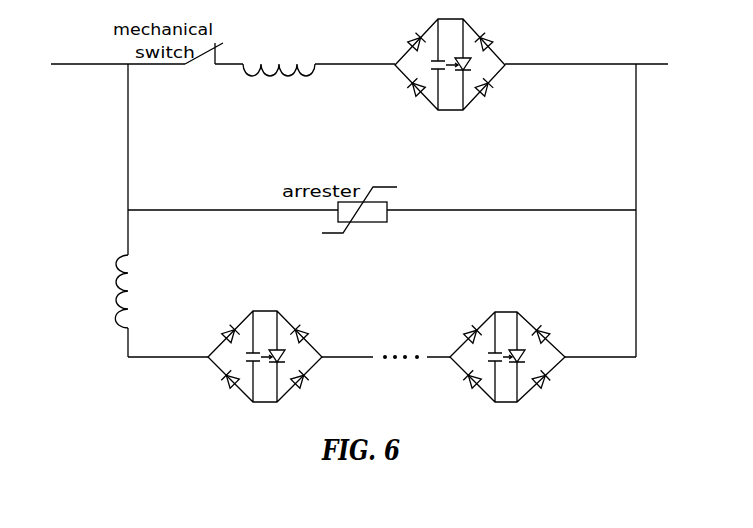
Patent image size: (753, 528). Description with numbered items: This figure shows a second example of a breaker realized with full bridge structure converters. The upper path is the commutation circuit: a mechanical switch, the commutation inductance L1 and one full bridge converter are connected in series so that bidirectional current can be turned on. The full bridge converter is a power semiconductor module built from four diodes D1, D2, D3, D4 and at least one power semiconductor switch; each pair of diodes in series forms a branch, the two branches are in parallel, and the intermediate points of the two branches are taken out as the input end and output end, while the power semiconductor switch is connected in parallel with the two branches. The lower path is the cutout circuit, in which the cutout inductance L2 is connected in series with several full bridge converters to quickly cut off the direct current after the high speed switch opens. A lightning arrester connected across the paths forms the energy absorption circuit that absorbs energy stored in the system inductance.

The diode D1 is at (409, 33).
The diode D2 is at (486, 33).
The diode D3 is at (486, 98).
The diode D4 is at (409, 98).
The commutation inductance L1 is at (289, 52).
The cutout inductance L2 is at (103, 281).